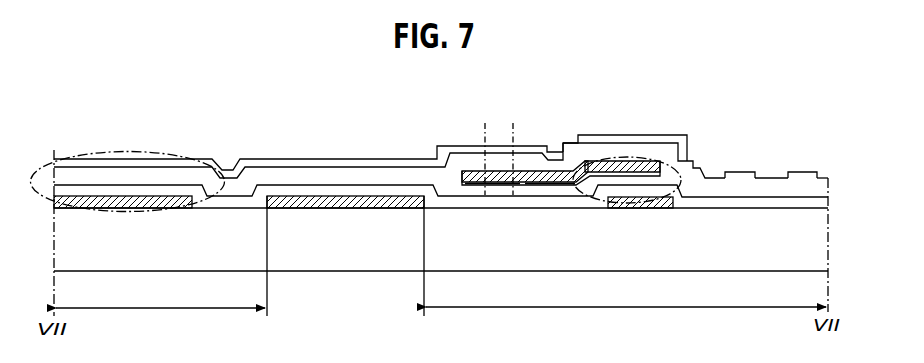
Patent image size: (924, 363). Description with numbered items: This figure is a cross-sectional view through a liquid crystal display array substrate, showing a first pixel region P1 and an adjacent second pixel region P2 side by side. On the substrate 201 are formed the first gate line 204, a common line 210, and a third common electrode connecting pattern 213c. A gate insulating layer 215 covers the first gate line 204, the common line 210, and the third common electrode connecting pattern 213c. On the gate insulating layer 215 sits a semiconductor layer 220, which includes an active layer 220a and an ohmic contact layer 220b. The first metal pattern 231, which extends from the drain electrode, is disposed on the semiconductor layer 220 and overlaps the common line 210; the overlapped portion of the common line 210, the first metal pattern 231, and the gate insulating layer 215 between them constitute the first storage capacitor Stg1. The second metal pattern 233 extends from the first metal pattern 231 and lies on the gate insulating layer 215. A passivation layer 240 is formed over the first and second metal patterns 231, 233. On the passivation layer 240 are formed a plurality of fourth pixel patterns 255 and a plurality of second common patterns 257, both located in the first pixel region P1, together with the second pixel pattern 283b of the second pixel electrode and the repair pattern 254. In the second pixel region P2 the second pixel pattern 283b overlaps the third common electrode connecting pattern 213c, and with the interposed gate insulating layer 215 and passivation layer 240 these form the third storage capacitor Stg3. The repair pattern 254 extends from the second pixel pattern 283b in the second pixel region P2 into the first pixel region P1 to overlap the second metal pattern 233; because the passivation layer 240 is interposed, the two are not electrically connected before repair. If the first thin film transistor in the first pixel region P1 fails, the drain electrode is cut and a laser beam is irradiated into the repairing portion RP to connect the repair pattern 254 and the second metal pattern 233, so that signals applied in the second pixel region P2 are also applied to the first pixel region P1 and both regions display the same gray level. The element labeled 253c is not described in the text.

The substrate 201 is at (800, 250).
The first gate line 204 is at (329, 208).
The common line 210 is at (640, 209).
The third common electrode connecting pattern 213c is at (131, 208).
The gate insulating layer 215 is at (466, 197).
The semiconductor layer 220 is at (542, 235).
The active layer 220a is at (523, 186).
The ohmic contact layer 220b is at (548, 186).
The first metal pattern 231 is at (612, 161).
The second metal pattern 233 is at (528, 172).
The passivation layer 240 is at (352, 172).
The connection electrode 253c is at (652, 140).
The repair pattern 254 is at (468, 150).
The fourth pixel patterns 255 is at (804, 172).
The second common patterns 257 is at (738, 172).
The second pixel pattern 283b is at (137, 162).
The repairing portion RP is at (499, 130).
The first storage capacitor Stg1 is at (590, 199).
The third storage capacitor Stg3 is at (94, 152).
The first pixel region P1 is at (626, 298).
The second pixel region P2 is at (160, 300).